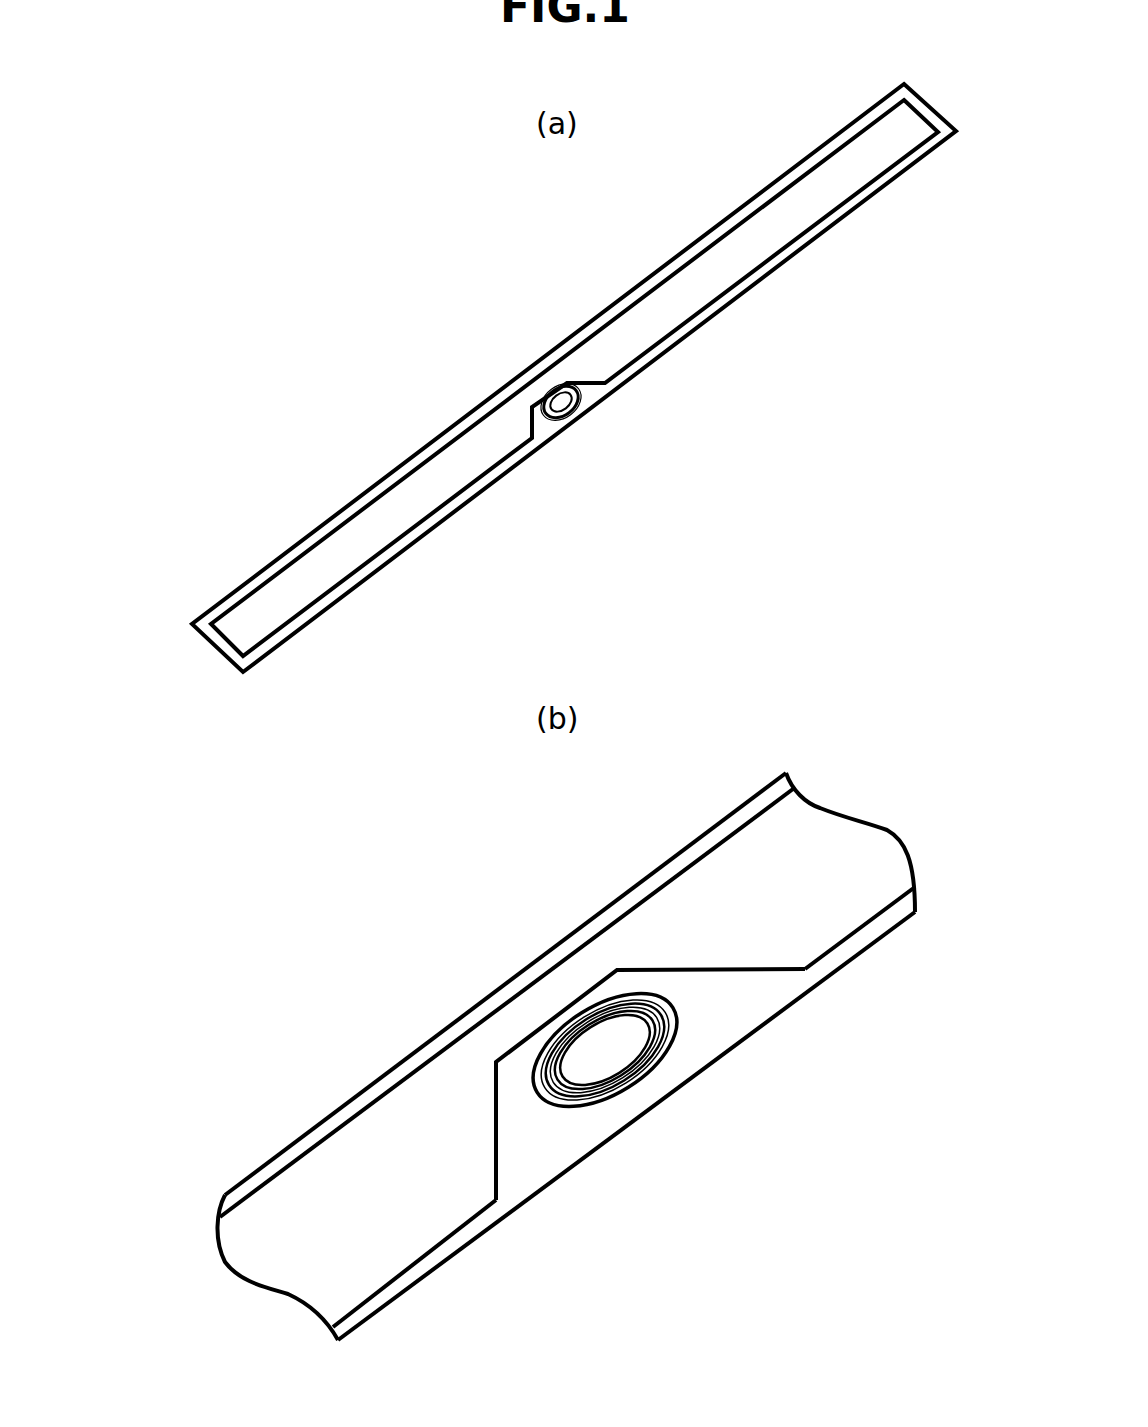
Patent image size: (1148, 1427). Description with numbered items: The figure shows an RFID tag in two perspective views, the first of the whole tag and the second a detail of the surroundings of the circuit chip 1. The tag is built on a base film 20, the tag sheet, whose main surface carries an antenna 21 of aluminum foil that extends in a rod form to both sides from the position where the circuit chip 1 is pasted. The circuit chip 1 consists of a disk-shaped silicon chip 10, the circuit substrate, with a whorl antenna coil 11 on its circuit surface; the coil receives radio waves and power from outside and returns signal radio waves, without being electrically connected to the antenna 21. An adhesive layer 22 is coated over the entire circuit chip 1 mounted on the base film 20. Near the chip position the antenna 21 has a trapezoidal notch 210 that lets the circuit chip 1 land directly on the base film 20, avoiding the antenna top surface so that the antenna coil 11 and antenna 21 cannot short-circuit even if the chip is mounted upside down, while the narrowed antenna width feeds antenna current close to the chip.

The circuit chip 1 is at (573, 408).
The silicon chip 10 is at (647, 1088).
The antenna coil 11 is at (648, 1023).
The base film 20 is at (865, 947).
The antenna 21 is at (740, 256).
The adhesive layer 22 is at (557, 412).
The notch 210 is at (497, 1125).